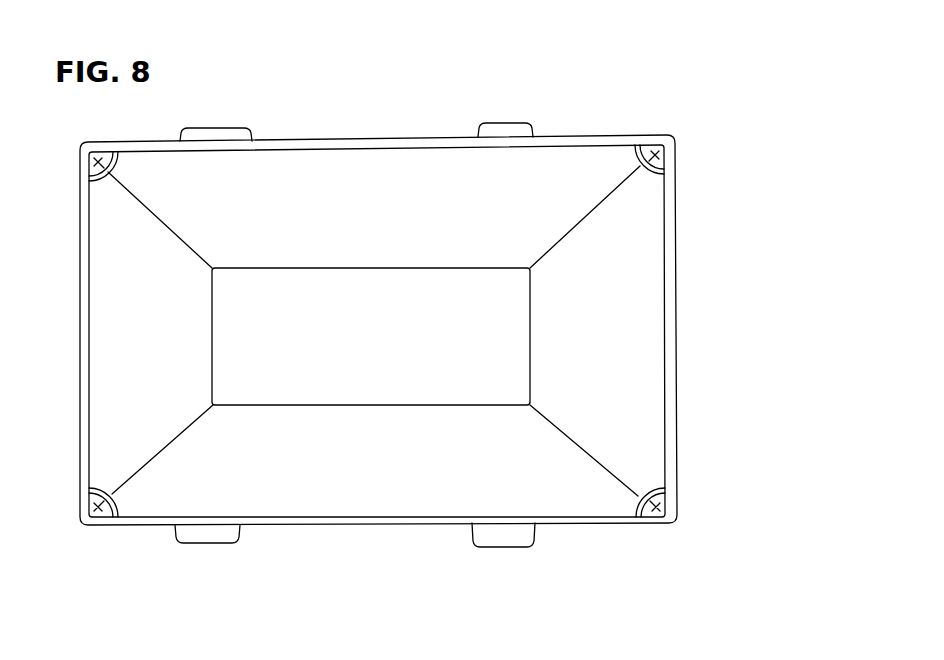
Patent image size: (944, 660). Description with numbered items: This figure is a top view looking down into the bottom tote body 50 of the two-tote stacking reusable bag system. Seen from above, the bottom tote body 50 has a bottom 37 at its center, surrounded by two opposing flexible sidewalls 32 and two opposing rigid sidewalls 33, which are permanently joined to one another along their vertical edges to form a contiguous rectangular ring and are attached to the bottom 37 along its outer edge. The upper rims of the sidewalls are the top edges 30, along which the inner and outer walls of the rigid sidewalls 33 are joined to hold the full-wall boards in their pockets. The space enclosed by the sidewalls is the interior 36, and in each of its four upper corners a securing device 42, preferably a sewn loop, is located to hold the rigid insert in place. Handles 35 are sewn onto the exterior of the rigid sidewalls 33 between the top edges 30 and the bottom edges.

The top edges 30 is at (670, 262).
The flexible sidewall 32 is at (638, 365).
The rigid sidewall 33 is at (338, 494).
The handle 35 is at (510, 130).
The interior 36 is at (376, 225).
The bottom 37 is at (335, 355).
The securing device 42 is at (642, 156).
The bottom tote body 50 is at (806, 141).